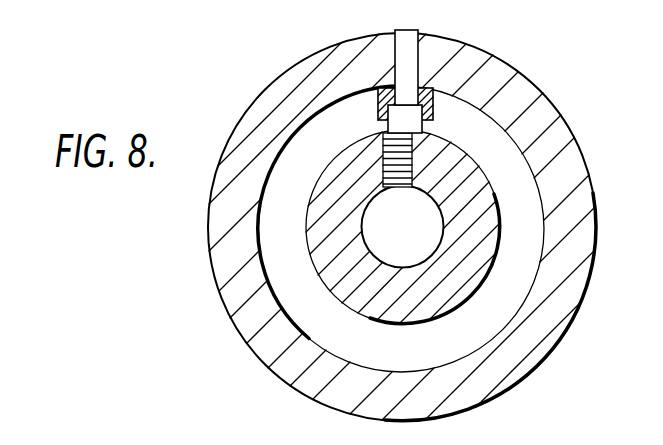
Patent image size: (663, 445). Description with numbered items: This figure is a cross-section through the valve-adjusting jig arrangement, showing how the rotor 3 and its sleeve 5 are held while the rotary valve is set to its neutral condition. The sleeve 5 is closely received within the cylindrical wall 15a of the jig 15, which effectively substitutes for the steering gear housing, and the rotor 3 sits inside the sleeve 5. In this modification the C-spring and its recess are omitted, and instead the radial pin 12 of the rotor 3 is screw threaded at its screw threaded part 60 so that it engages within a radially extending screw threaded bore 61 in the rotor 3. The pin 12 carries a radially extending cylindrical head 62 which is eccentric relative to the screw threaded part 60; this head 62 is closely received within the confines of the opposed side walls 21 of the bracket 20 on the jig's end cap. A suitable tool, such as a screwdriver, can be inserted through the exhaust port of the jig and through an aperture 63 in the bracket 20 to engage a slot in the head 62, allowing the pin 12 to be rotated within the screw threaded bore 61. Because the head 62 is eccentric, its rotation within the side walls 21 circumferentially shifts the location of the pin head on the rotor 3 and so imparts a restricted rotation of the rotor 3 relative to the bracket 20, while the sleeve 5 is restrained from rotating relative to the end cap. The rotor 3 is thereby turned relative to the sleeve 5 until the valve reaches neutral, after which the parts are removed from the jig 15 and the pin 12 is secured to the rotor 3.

The rotor 3 is at (482, 215).
The sleeve 5 is at (270, 215).
The radial pin 12 is at (380, 137).
The jig 15 is at (212, 298).
The cylindrical wall 15a is at (268, 352).
The bracket 20 is at (433, 89).
The opposed side walls 21 is at (386, 107).
The screw threaded part 60 is at (389, 184).
The screw threaded bore 61 is at (413, 162).
The cylindrical head 62 is at (434, 100).
The aperture 63 is at (404, 88).